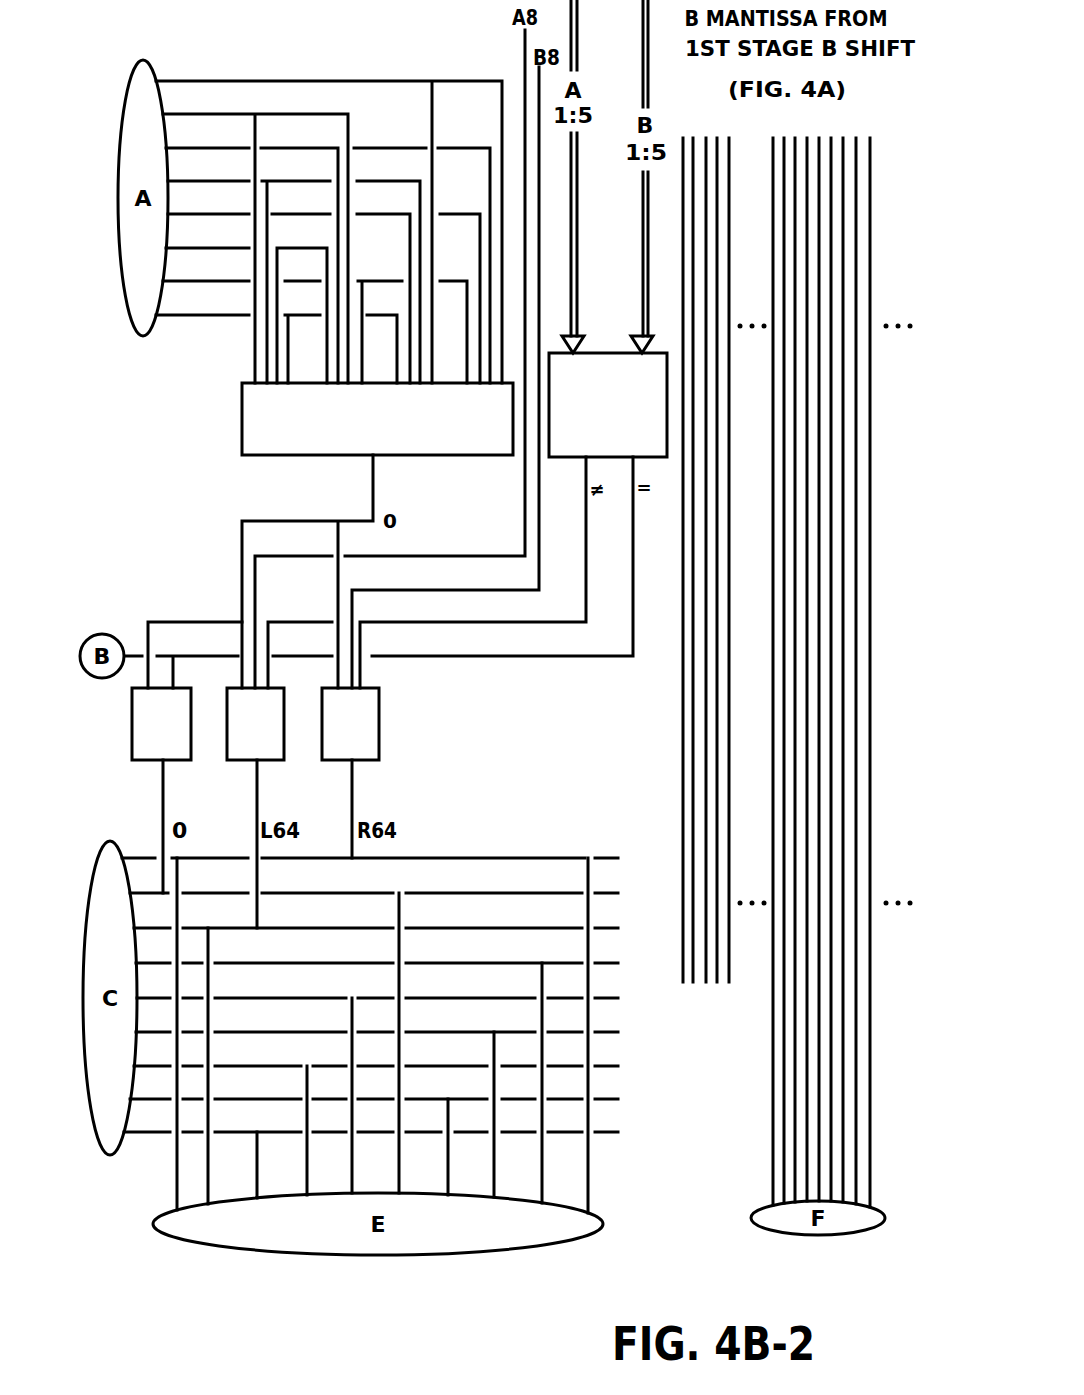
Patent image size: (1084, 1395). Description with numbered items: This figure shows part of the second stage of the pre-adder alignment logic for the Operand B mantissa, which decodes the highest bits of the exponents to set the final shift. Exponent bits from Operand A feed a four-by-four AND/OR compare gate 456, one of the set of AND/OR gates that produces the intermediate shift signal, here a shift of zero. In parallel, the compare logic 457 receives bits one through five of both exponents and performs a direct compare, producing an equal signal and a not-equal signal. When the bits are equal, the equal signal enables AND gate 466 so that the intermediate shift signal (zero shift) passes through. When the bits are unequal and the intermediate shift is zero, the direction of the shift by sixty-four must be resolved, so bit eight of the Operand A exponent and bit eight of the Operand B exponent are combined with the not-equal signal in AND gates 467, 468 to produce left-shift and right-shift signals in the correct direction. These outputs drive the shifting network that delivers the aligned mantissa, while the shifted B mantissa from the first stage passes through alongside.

The 4×N AND/OR gate 456 is at (447, 457).
The compare logic 457 is at (596, 350).
The AND gate 466 is at (175, 762).
The AND gate 467 is at (268, 762).
The AND gate 468 is at (380, 725).